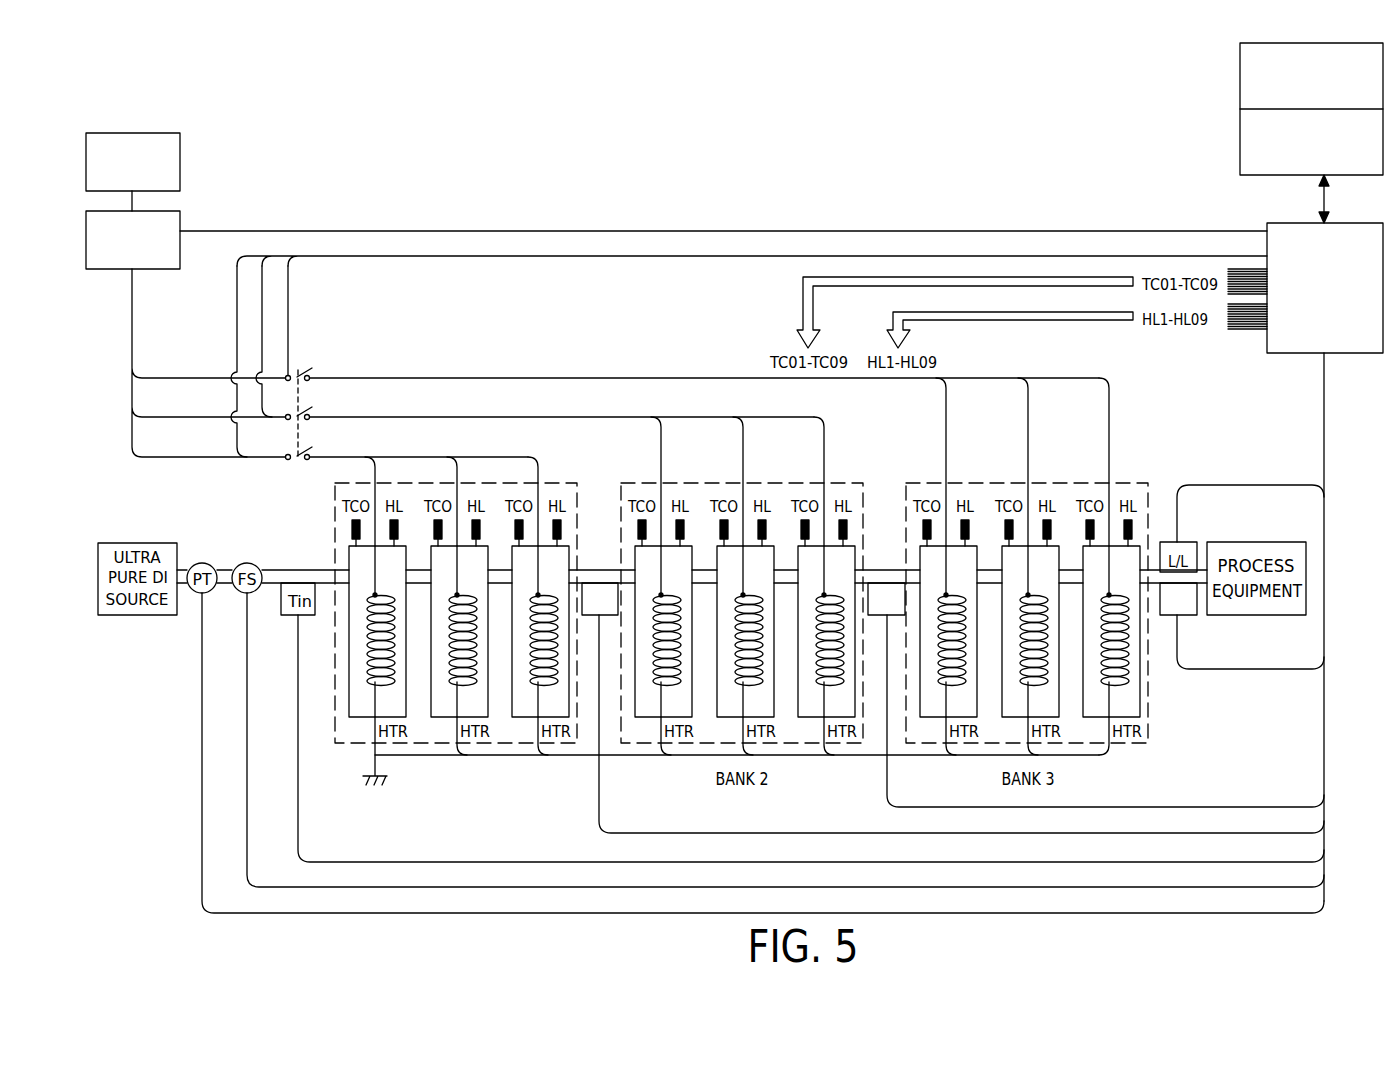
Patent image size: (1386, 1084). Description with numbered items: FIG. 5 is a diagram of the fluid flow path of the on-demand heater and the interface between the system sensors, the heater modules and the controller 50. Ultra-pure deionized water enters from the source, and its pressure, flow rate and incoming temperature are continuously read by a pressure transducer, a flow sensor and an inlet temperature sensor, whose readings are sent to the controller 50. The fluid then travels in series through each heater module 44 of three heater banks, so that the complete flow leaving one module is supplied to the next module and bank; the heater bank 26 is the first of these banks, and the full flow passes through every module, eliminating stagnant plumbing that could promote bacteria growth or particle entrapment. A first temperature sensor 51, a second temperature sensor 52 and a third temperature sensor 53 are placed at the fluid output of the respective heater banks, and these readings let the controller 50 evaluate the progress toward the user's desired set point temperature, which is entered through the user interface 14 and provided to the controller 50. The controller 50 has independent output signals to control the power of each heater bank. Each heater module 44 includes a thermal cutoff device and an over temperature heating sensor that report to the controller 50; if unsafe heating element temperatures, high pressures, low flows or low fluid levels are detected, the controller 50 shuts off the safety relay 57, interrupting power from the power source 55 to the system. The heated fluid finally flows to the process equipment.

The user interface 14 is at (1240, 109).
The heater bank 26 is at (455, 804).
The heater module 44 is at (360, 703).
The controller 50 is at (1283, 353).
The temperature sensor T1 51 is at (588, 617).
The temperature sensor T2 52 is at (897, 617).
The temperature sensor T3 53 is at (1165, 617).
The power source 55 is at (180, 150).
The safety relay 57 is at (180, 218).